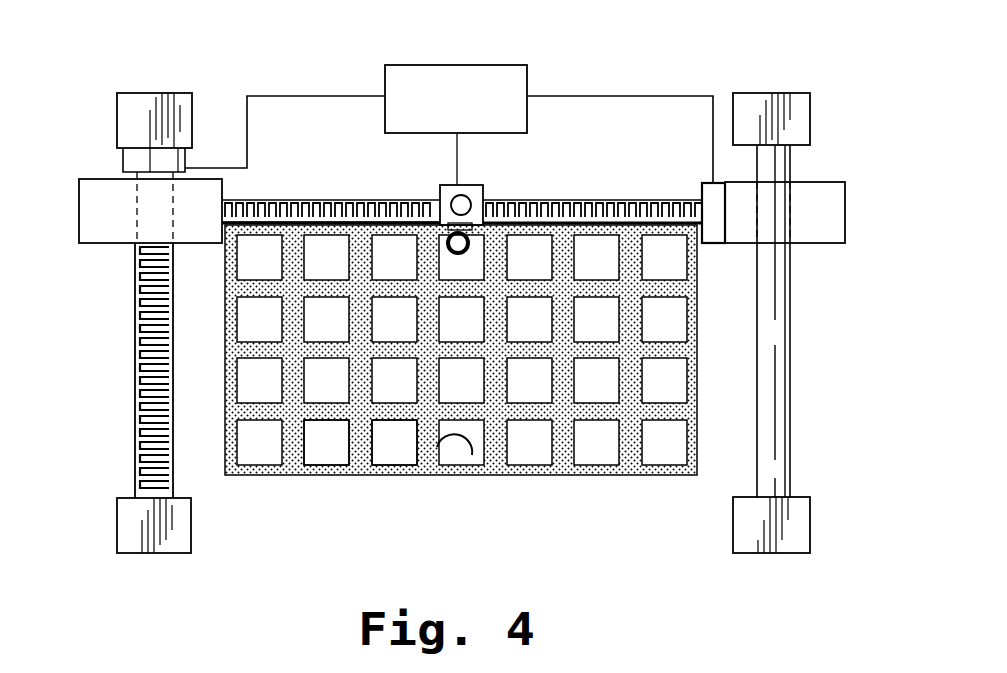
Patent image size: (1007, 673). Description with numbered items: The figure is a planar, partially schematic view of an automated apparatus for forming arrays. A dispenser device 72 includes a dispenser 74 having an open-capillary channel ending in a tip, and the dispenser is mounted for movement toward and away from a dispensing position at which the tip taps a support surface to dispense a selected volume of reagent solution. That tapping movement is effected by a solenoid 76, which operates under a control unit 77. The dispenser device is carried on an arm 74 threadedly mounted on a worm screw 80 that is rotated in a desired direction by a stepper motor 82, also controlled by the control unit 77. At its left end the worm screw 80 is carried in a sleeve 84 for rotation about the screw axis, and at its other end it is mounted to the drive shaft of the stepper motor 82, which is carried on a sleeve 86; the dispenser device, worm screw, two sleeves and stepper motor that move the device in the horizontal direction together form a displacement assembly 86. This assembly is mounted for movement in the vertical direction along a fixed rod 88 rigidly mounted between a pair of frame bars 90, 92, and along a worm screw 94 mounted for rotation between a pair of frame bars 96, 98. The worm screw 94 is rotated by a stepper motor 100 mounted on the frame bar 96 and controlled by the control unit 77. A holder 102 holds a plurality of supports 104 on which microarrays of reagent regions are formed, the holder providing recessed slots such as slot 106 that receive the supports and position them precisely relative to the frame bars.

The dispenser device 72 is at (432, 184).
The dispenser 74 is at (454, 238).
The solenoid 76 is at (464, 196).
The control unit 77 is at (440, 72).
The worm screw 80 is at (578, 203).
The stepper motor 82 is at (704, 193).
The sleeve 84 is at (124, 233).
The displacement assembly 86 is at (320, 198).
The fixed rod 88 is at (776, 342).
The frame bar 90 is at (800, 118).
The frame bar 92 is at (800, 510).
The worm screw 94 is at (143, 398).
The frame bar 96 is at (138, 104).
The frame bar 98 is at (176, 529).
The stepper motor 100 is at (134, 168).
The holder 102 is at (500, 478).
The supports 104 is at (327, 453).
The slot 106 is at (446, 455).